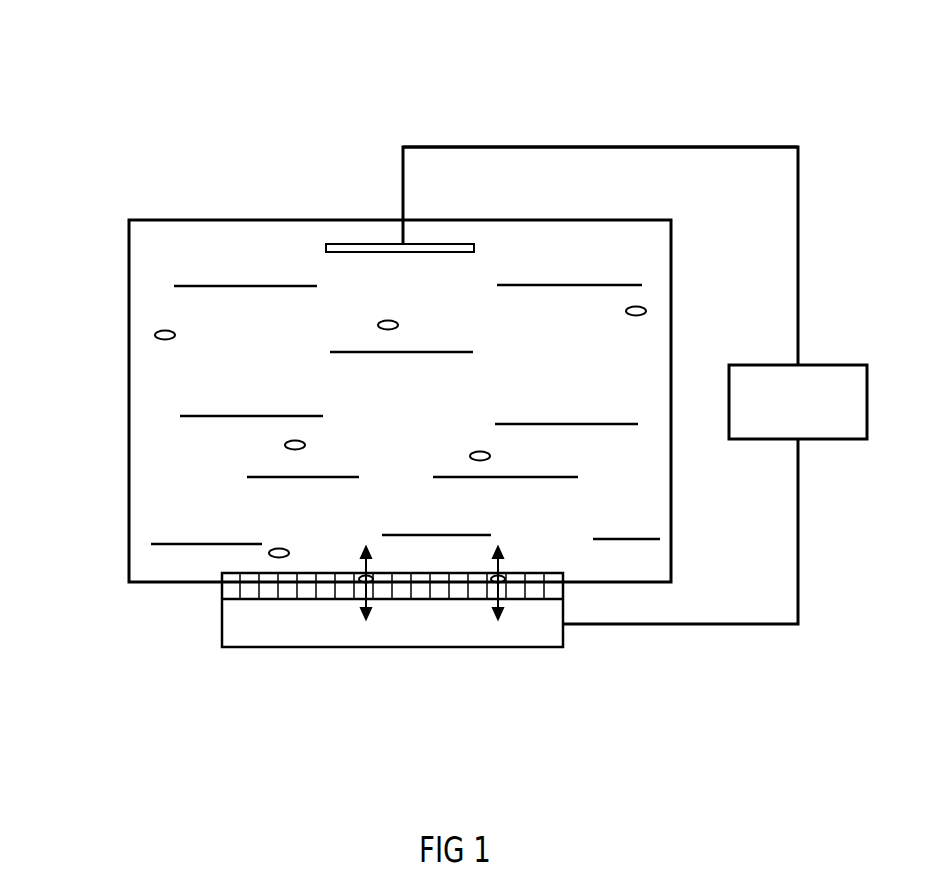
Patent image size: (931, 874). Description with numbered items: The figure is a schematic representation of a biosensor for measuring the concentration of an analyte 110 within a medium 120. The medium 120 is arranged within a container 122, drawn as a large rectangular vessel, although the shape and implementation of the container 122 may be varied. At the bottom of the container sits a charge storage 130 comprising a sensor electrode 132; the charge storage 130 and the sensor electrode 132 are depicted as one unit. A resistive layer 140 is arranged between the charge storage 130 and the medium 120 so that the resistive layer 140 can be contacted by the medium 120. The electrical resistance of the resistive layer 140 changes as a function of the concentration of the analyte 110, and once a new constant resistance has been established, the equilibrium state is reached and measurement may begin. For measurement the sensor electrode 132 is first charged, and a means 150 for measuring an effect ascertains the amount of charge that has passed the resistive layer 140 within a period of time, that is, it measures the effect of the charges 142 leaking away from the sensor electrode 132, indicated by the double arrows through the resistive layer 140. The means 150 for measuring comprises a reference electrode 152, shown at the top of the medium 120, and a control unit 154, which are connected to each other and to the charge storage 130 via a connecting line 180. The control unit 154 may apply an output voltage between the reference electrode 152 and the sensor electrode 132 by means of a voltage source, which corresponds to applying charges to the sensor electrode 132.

The analyte 110 is at (160, 333).
The medium 120 is at (374, 359).
The container 122 is at (231, 219).
The charge storage 130 is at (344, 626).
The sensor electrode 132 is at (392, 610).
The resistive layer 140 is at (222, 590).
The charges 142 is at (363, 602).
The means for measuring an effect 150 is at (596, 321).
The reference electrode 152 is at (378, 244).
The control unit 154 is at (798, 264).
The connecting line 180 is at (530, 147).